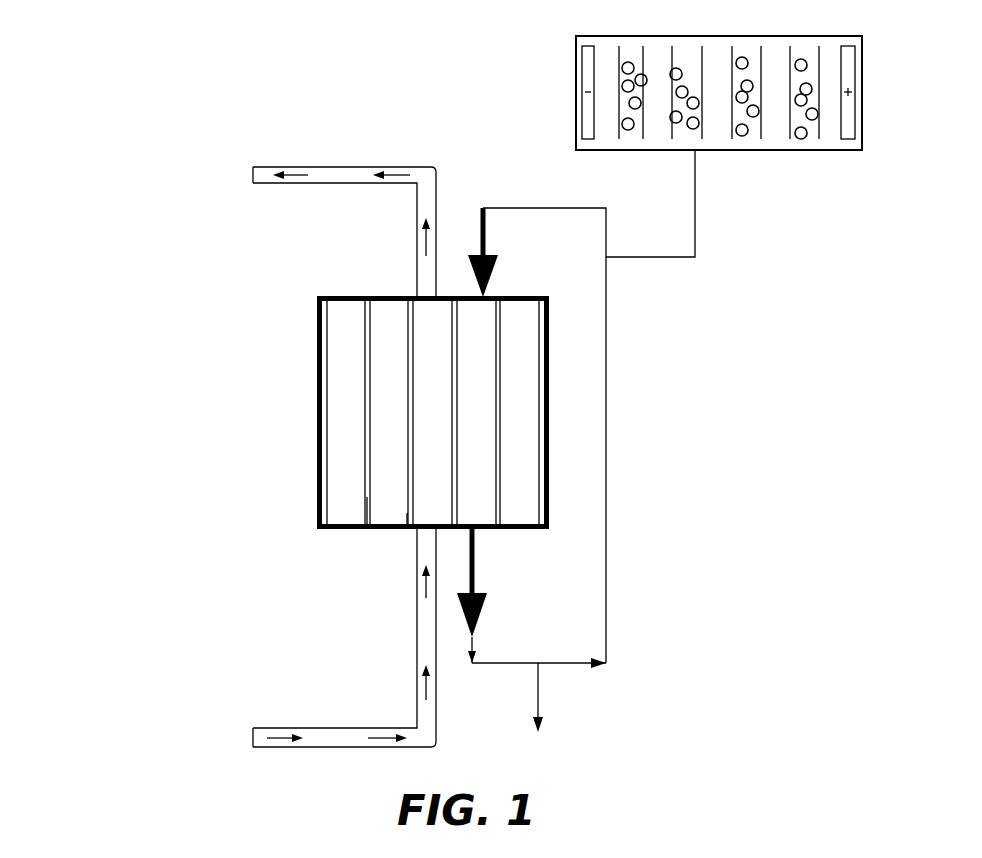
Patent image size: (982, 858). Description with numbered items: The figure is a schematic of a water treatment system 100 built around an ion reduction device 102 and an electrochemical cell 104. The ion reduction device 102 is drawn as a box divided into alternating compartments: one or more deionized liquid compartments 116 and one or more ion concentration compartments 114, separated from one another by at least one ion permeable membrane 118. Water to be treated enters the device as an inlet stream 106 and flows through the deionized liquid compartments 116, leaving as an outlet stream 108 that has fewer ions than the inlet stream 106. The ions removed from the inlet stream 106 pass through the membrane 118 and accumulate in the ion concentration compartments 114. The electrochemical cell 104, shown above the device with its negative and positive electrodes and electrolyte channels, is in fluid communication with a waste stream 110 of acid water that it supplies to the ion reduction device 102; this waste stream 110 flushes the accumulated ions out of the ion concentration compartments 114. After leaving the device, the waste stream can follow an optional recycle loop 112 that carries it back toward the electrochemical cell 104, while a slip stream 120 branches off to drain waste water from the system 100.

The water treatment system 100 is at (165, 225).
The ion reduction device 102 is at (318, 428).
The electrochemical cell 104 is at (577, 100).
The inlet stream 106 is at (253, 738).
The outlet stream 108 is at (253, 173).
The waste stream 110 is at (483, 208).
The recycle loop 112 is at (606, 405).
The ion concentration compartment 114 is at (372, 344).
The deionized liquid compartment 116 is at (329, 374).
The ion permeable membrane 118 is at (407, 513).
The slip stream 120 is at (538, 693).